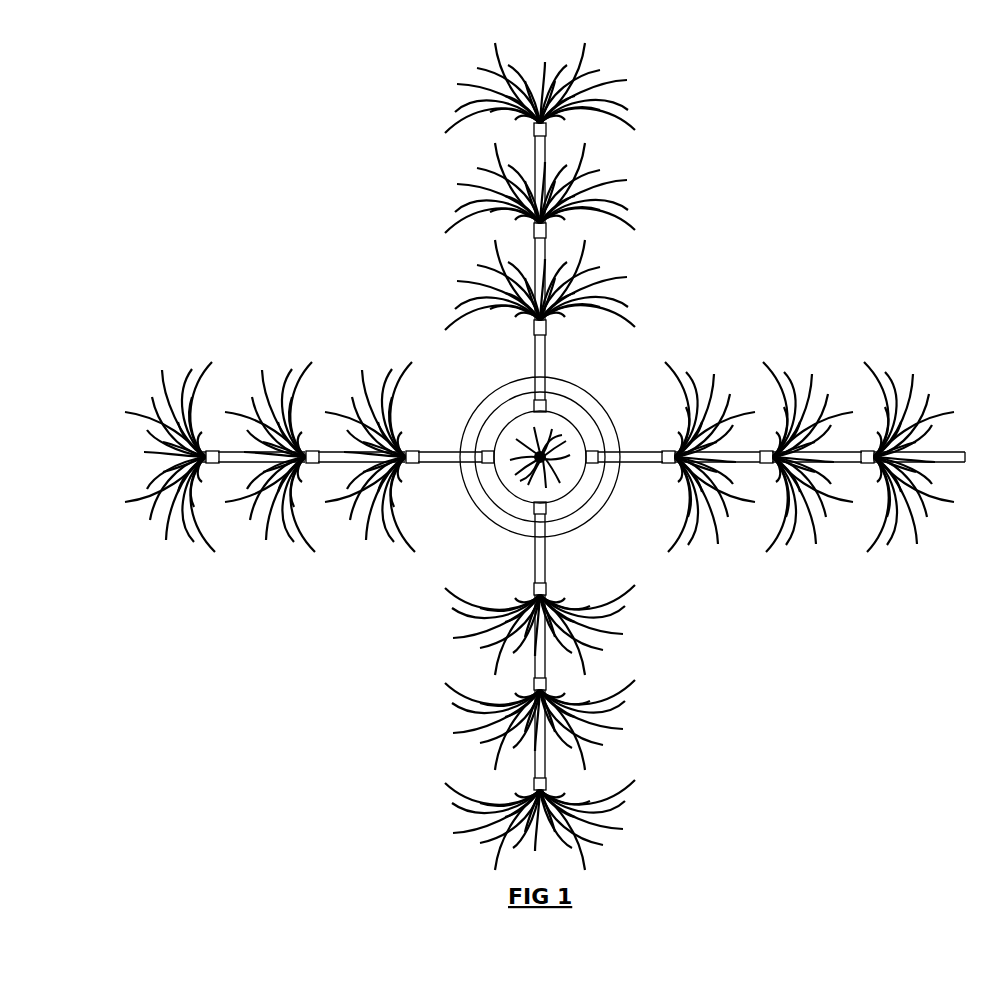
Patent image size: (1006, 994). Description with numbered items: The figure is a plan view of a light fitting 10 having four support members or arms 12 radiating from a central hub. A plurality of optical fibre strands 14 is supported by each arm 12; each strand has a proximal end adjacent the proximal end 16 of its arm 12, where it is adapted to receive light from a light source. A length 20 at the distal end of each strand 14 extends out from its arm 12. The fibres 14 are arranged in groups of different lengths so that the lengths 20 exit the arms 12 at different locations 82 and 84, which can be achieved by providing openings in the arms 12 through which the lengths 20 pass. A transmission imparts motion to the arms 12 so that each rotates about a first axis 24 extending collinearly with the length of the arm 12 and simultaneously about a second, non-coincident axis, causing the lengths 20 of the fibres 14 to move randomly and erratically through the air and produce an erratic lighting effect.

The light fitting 10 is at (335, 150).
The support member or arm 12 is at (546, 157).
The optical fibre strand 14 is at (455, 97).
The proximal end of arm 16 is at (440, 465).
The length at distal end of strand 20 is at (618, 82).
The first axis 24 is at (947, 455).
The location 82 is at (416, 446).
The location 84 is at (532, 131).